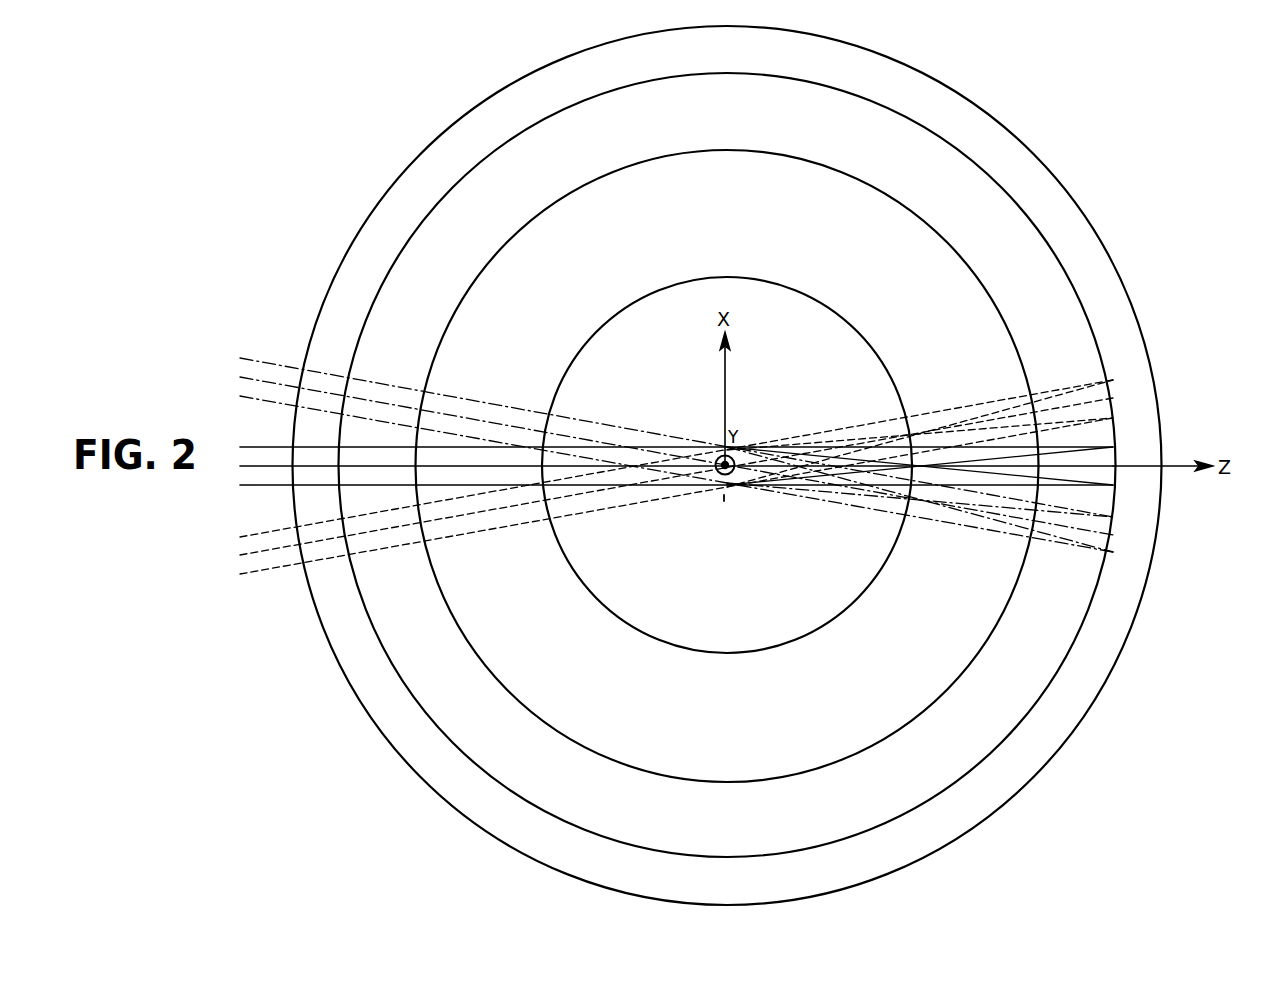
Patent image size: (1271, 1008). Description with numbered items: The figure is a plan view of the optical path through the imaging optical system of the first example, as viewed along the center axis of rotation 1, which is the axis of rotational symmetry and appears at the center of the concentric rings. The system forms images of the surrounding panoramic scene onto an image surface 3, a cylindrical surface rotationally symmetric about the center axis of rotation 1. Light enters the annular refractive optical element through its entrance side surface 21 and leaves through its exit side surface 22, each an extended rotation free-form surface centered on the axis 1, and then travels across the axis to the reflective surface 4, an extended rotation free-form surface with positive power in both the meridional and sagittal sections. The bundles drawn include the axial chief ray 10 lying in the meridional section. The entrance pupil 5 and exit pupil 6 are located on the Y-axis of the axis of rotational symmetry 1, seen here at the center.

The center axis of rotation 1 is at (735, 478).
The image surface 3 is at (890, 553).
The reflective surface 4 is at (1097, 590).
The entrance pupil 5 is at (715, 497).
The exit pupil 6 is at (725, 465).
The axial chief ray 10 is at (260, 467).
The entrance side surface 21 is at (319, 623).
The exit side surface 22 is at (444, 595).